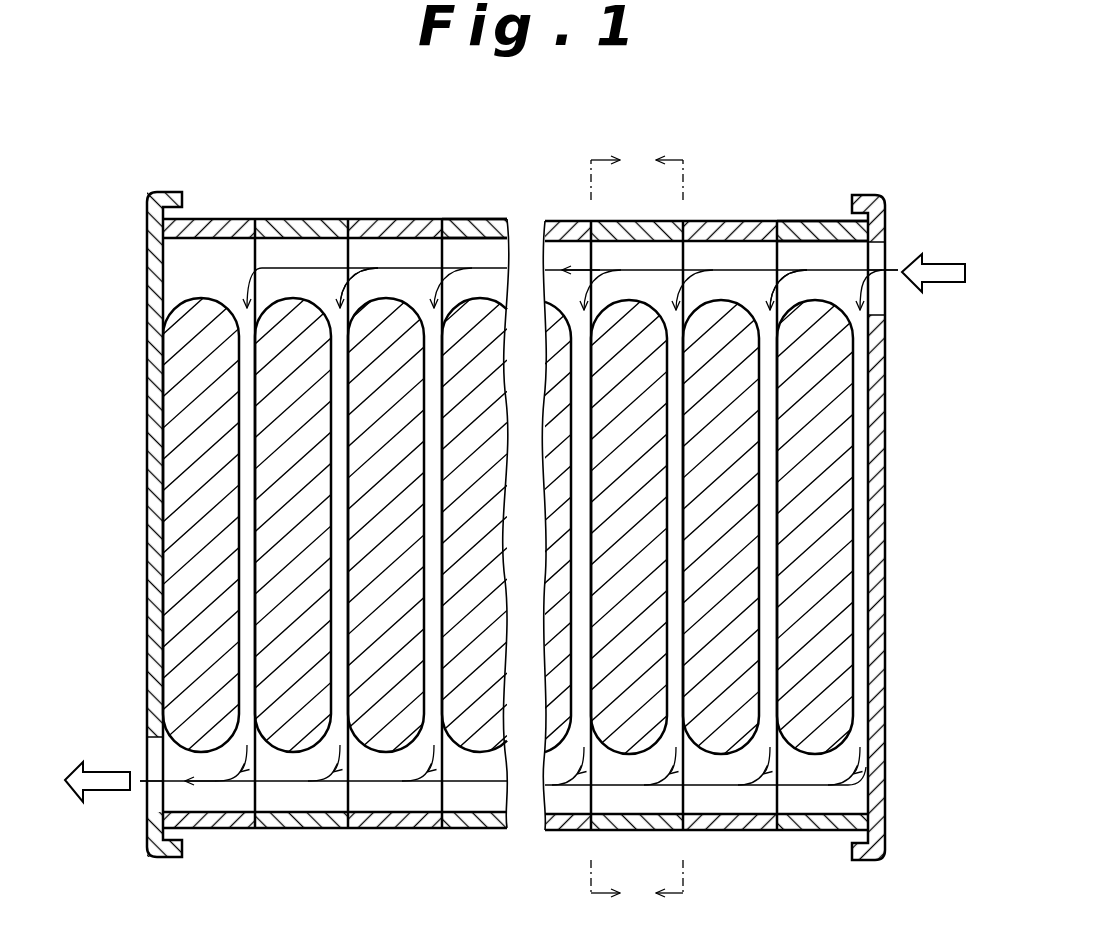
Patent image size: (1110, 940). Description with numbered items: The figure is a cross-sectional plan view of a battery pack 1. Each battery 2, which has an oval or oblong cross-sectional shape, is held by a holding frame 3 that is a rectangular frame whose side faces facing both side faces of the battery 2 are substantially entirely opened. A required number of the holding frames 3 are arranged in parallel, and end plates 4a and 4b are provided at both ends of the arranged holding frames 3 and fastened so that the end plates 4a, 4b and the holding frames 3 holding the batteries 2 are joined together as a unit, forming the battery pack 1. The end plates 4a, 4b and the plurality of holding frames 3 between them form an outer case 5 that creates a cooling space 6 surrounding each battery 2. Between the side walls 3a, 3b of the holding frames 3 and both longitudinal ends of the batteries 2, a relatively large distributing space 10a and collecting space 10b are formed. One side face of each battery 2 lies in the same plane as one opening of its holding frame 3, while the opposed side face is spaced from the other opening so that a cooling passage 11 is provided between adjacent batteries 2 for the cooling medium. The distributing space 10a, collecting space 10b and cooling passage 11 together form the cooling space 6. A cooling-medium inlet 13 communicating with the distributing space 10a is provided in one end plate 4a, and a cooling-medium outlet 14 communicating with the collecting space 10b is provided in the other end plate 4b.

The battery pack 1 is at (188, 130).
The battery 2 is at (211, 521).
The holding frame 3 is at (219, 215).
The side wall 3a is at (822, 831).
The side wall 3b is at (822, 221).
The end plate 4a is at (872, 690).
The end plate 4b is at (150, 588).
The outer case 5 is at (470, 215).
The cooling space 6 is at (401, 258).
The distributing space 10a is at (571, 250).
The collecting space 10b is at (485, 790).
The cooling passage 11 is at (247, 422).
The cooling-medium inlet 13 is at (868, 315).
The cooling-medium outlet 14 is at (147, 752).